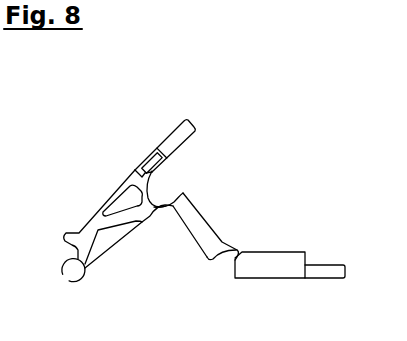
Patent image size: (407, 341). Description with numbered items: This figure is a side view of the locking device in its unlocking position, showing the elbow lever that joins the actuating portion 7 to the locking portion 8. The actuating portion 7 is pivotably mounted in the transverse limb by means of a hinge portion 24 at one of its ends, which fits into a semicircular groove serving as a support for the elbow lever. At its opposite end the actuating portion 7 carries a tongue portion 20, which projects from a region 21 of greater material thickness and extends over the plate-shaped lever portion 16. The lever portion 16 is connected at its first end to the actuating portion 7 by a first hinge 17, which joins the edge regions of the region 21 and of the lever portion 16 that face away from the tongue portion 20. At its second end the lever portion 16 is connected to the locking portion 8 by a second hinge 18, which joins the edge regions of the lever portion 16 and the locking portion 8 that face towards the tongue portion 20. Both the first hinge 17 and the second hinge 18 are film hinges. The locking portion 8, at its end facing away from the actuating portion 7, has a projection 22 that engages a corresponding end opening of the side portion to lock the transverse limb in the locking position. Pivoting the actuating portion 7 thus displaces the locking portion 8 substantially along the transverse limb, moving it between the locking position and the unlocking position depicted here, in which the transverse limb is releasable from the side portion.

The actuating portion 7 is at (113, 186).
The locking portion 8 is at (273, 267).
The lever portion 16 is at (192, 223).
The first hinge 17 is at (162, 208).
The second hinge 18 is at (237, 249).
The tongue portion 20 is at (175, 140).
The region of greater material thickness 21 is at (113, 213).
The projection 22 is at (323, 268).
The hinge portion 24 is at (71, 275).